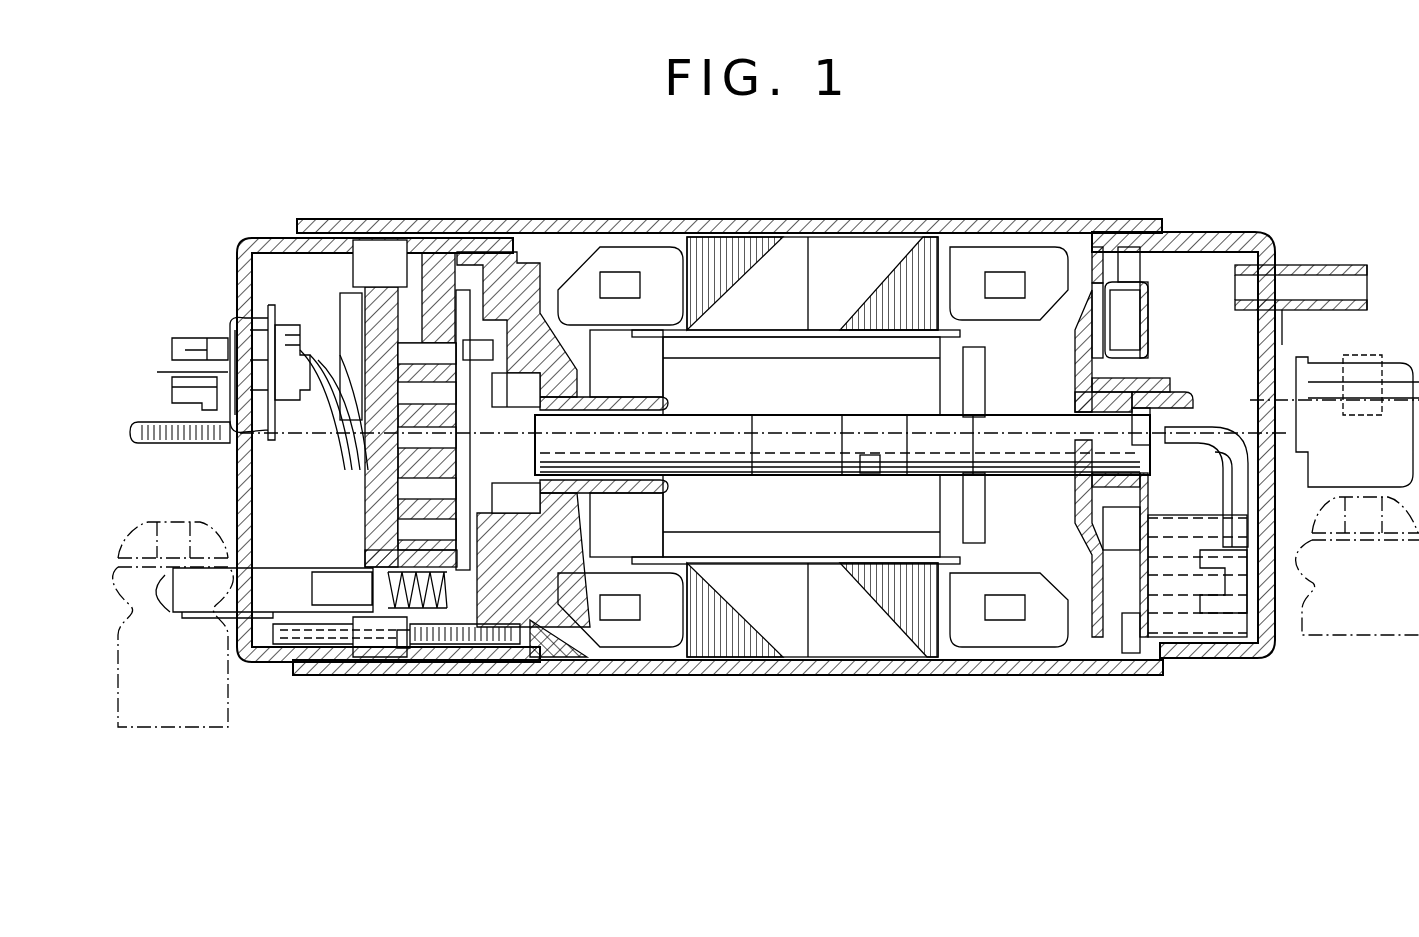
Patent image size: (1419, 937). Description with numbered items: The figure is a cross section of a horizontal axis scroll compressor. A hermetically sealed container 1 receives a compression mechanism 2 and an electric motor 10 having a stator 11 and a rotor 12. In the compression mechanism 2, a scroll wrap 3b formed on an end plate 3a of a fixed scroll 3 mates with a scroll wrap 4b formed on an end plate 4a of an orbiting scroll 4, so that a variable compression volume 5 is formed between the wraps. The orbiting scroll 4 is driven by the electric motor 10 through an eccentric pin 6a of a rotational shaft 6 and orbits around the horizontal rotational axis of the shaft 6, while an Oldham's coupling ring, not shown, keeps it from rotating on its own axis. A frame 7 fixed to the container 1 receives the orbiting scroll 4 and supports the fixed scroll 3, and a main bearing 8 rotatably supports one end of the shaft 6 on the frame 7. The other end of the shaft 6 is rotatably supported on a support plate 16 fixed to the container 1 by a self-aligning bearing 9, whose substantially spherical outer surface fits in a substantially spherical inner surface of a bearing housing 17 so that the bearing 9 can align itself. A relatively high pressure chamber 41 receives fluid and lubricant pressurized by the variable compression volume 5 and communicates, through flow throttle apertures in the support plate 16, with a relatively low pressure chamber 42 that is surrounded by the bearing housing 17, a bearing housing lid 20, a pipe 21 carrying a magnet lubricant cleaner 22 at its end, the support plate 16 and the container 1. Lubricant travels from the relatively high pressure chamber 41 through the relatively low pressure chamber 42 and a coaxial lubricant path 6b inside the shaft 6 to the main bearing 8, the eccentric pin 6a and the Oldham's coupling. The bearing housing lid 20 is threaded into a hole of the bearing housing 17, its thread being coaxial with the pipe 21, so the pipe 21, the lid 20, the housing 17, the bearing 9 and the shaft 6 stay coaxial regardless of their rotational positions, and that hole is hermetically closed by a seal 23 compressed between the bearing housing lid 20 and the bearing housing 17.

The hermetically sealed container 1 is at (1000, 222).
The compression mechanism 2 is at (437, 345).
The fixed scroll 3 is at (372, 290).
The end plate 3a is at (350, 290).
The scroll wrap 3b is at (473, 267).
The orbiting scroll 4 is at (488, 645).
The end plate 4a is at (455, 645).
The scroll wrap 4b is at (423, 340).
The variable compression volume 5 is at (405, 393).
The rotational shaft 6 is at (795, 466).
The eccentric pin 6a is at (530, 622).
The coaxial lubricant path 6b is at (870, 460).
The frame 7 is at (522, 265).
The main bearing 8 is at (642, 560).
The self-aligning bearing 9 is at (1118, 392).
The electric motor 10 is at (738, 340).
The stator 11 is at (840, 247).
The rotor 12 is at (870, 355).
The support plate 16 is at (1092, 255).
The bearing housing 17 is at (1160, 392).
The bearing housing lid 20 is at (1188, 393).
The pipe 21 is at (1215, 523).
The magnet lubricant cleaner 22 is at (1203, 607).
The seal 23 is at (1120, 520).
The relatively high pressure chamber 41 is at (1065, 652).
The relatively low pressure chamber 42 is at (1165, 605).